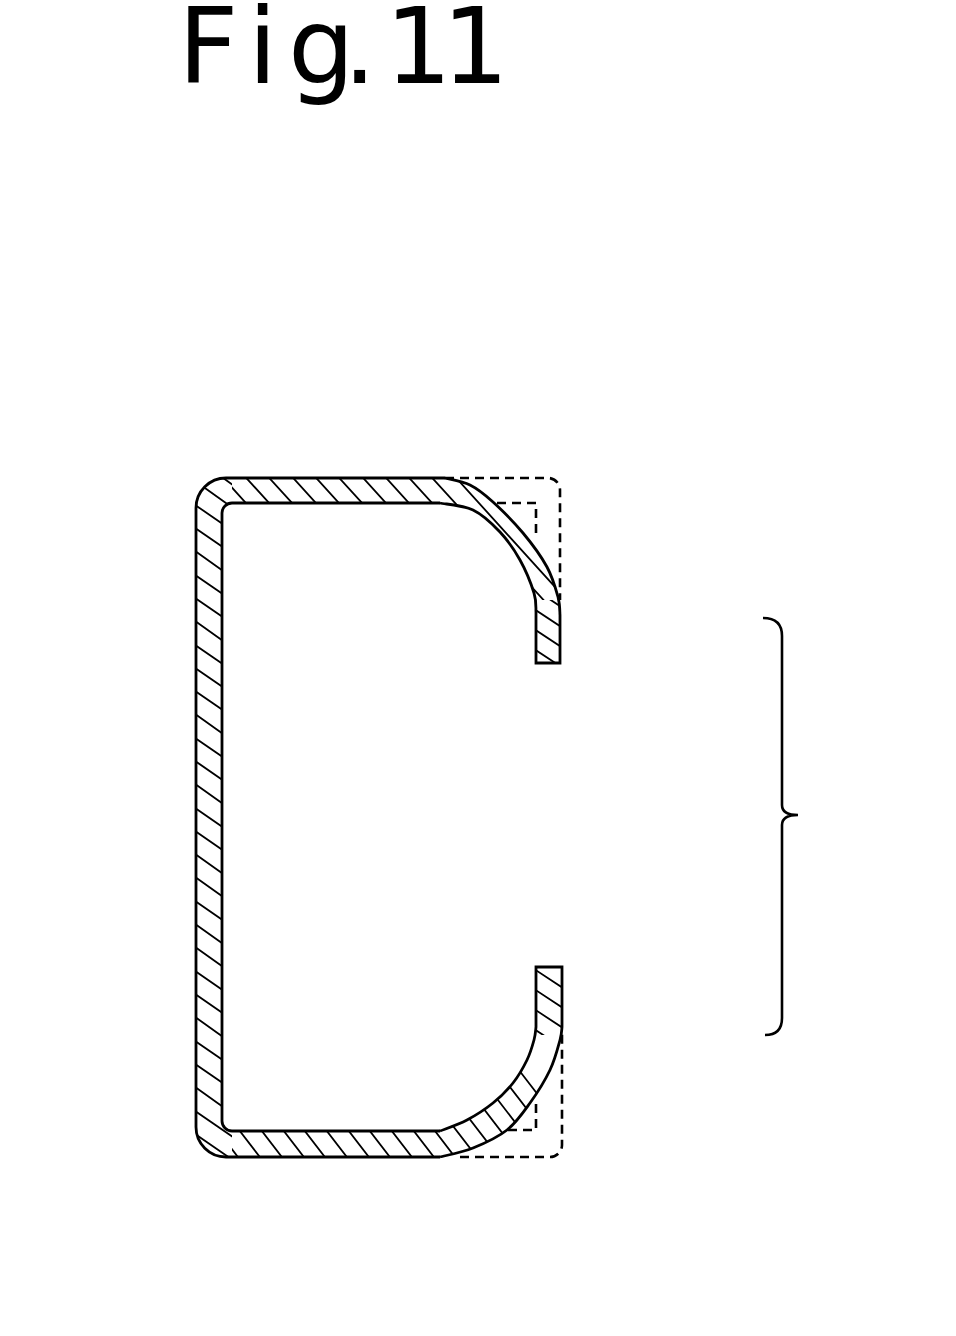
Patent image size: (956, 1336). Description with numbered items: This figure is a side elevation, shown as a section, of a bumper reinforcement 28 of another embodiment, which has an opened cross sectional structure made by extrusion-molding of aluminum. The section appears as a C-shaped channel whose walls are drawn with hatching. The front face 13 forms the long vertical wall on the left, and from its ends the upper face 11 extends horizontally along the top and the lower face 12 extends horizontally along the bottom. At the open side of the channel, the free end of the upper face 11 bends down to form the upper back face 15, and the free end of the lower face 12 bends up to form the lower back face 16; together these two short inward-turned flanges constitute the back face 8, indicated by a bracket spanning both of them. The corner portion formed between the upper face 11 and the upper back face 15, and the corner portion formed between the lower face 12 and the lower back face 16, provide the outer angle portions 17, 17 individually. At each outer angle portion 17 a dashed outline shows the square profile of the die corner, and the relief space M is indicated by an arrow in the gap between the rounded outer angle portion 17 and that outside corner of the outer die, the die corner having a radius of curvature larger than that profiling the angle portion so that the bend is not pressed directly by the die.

The bumper reinforcement 28 is at (183, 535).
The upper face 11 is at (337, 478).
The lower face 12 is at (366, 1157).
The front face 13 is at (197, 819).
The upper back face 15 is at (562, 612).
The lower back face 16 is at (562, 1027).
The outer angle portions 17 is at (493, 502).
The relief spaces M is at (527, 510).
The back face 8 is at (797, 826).